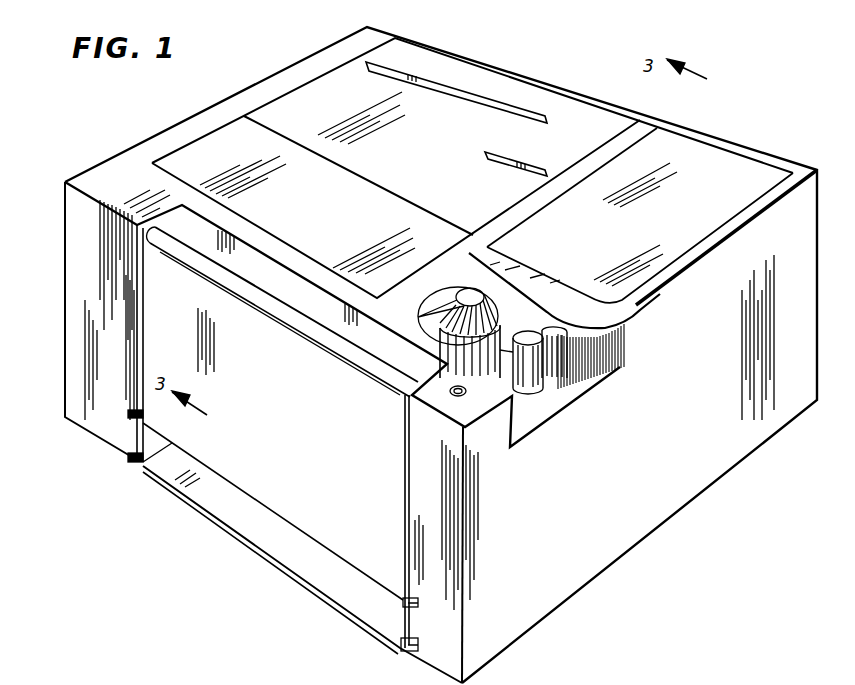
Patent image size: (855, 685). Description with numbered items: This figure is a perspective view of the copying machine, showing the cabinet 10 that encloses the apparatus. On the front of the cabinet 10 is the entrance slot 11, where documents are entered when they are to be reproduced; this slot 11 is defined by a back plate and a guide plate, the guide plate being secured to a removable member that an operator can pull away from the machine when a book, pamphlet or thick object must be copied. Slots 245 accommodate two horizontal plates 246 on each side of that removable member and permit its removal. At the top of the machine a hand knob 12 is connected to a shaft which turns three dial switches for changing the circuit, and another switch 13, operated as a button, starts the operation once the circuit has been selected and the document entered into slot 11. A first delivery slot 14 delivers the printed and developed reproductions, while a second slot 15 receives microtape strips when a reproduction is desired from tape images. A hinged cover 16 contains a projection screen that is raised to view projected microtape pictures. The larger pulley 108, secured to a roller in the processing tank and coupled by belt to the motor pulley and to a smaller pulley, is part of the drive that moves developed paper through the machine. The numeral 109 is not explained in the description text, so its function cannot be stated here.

The cabinet 10 is at (220, 104).
The entrance slot 11 is at (278, 276).
The hand knob 12 is at (470, 289).
The switch 13 is at (452, 388).
The first delivery slot 14 is at (480, 100).
The second slot 15 is at (543, 170).
The hinged cover 16 is at (690, 258).
The larger pulley 108 is at (550, 379).
The cylinder 109 is at (527, 393).
The slots 245 is at (133, 416).
The horizontal plates 246 is at (141, 467).